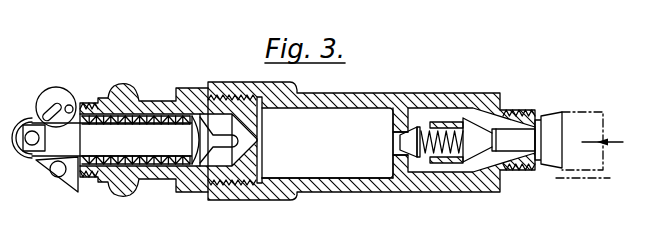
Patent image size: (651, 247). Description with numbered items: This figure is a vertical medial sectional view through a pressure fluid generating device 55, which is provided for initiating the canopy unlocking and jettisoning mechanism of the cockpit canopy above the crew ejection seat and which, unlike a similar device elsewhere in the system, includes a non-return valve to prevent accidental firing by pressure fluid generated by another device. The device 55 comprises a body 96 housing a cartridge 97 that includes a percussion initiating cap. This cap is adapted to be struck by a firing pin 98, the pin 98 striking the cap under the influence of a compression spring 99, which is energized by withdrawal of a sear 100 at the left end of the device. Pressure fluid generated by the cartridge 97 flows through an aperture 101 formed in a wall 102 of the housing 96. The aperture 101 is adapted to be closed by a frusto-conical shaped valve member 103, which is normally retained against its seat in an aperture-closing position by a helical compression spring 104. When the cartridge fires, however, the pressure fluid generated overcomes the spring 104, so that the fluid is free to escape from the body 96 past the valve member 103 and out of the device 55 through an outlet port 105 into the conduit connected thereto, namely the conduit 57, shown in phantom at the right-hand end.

The pressure fluid generating device 55 is at (252, 79).
The conduit 57 is at (563, 108).
The body 96 is at (386, 174).
The cartridge 97 is at (350, 172).
The firing pin 98 is at (206, 194).
The compression spring 99 is at (143, 116).
The sear 100 is at (58, 100).
The aperture 101 is at (412, 124).
The wall 102 is at (413, 166).
The valve member 103 is at (447, 118).
The helical compression spring 104 is at (487, 122).
The outlet port 105 is at (505, 135).